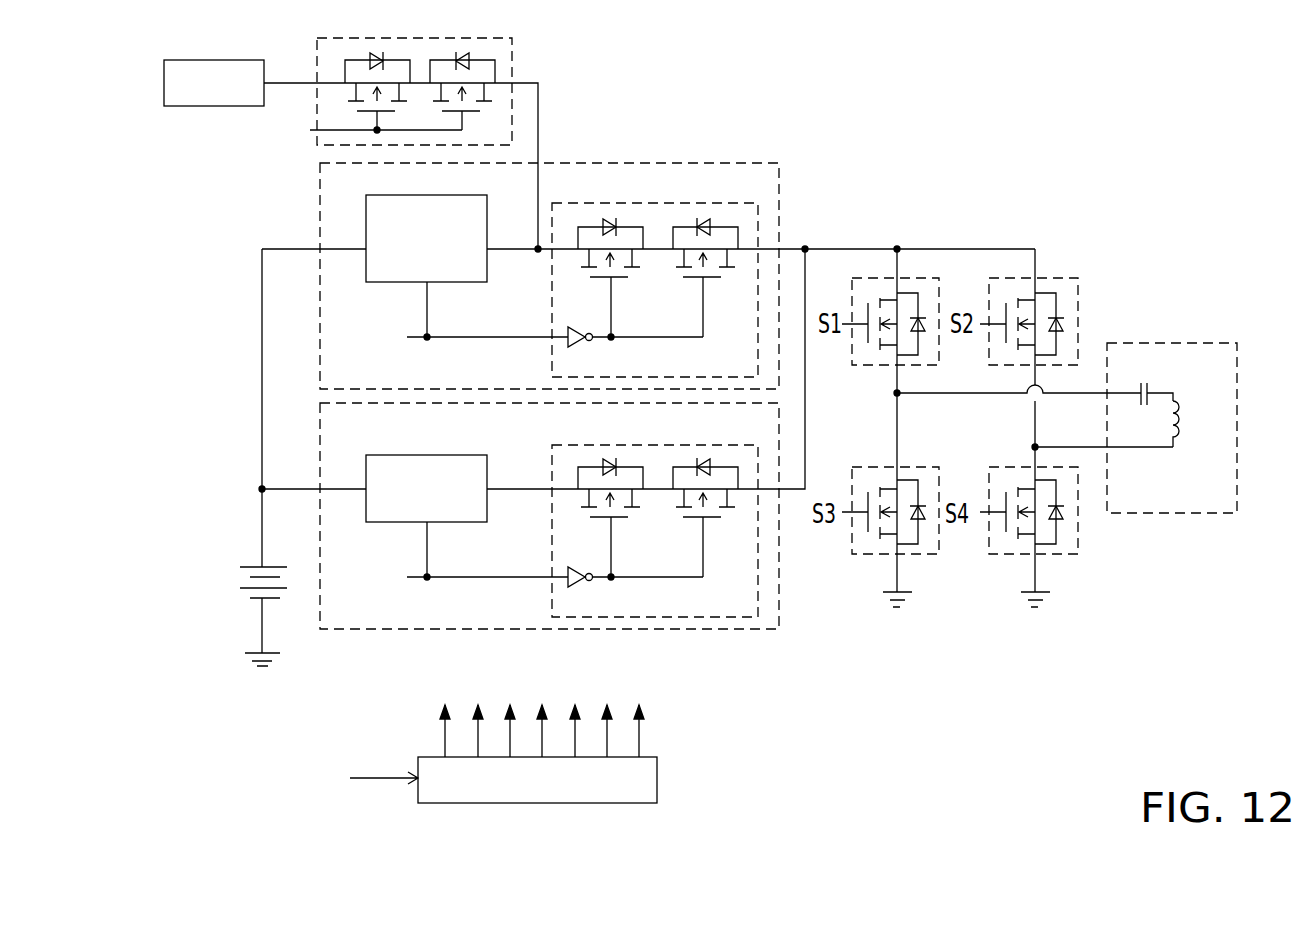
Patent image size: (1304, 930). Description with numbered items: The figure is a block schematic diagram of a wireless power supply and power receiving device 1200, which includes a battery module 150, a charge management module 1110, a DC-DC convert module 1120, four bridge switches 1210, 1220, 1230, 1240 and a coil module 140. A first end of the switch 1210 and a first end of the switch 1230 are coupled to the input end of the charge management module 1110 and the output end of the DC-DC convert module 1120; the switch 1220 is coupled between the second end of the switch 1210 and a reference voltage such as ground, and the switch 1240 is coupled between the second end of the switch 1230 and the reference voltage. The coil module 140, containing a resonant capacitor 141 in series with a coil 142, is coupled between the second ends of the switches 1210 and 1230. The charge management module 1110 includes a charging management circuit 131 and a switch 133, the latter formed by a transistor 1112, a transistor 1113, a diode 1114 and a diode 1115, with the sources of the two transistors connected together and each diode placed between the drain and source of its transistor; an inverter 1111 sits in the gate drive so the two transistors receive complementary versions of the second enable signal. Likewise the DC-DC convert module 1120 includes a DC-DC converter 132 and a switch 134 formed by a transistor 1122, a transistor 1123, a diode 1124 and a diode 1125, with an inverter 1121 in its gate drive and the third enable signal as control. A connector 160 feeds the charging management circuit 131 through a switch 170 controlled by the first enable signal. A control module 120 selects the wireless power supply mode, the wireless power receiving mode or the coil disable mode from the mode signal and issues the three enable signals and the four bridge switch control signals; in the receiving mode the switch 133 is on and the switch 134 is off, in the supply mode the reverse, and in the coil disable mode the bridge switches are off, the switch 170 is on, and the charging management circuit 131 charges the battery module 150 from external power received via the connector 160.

The control module 120 is at (657, 778).
The charging management circuit 131 is at (427, 195).
The DC-DC converter 132 is at (410, 455).
The switch 133 is at (779, 213).
The switch 134 is at (692, 618).
The coil module 140 is at (1167, 515).
The resonant capacitor 141 is at (1142, 382).
The coil 142 is at (1183, 437).
The battery module 150 is at (240, 595).
The connector 160 is at (213, 107).
The switch 170 is at (512, 60).
The charge management module 1110 is at (673, 163).
The inverter 1111 is at (585, 345).
The transistor 1112 is at (632, 275).
The transistor 1113 is at (725, 275).
The diode 1114 is at (612, 222).
The diode 1115 is at (700, 222).
The DC-DC convert module 1120 is at (425, 632).
The inverter 1121 is at (585, 585).
The transistor 1122 is at (632, 515).
The transistor 1123 is at (725, 515).
The diode 1124 is at (612, 462).
The diode 1125 is at (700, 462).
The wireless power supply and power receiving device 1200 is at (922, 797).
The switch 1210 is at (918, 276).
The switch 1220 is at (875, 557).
The switch 1230 is at (1057, 276).
The switch 1240 is at (1012, 557).